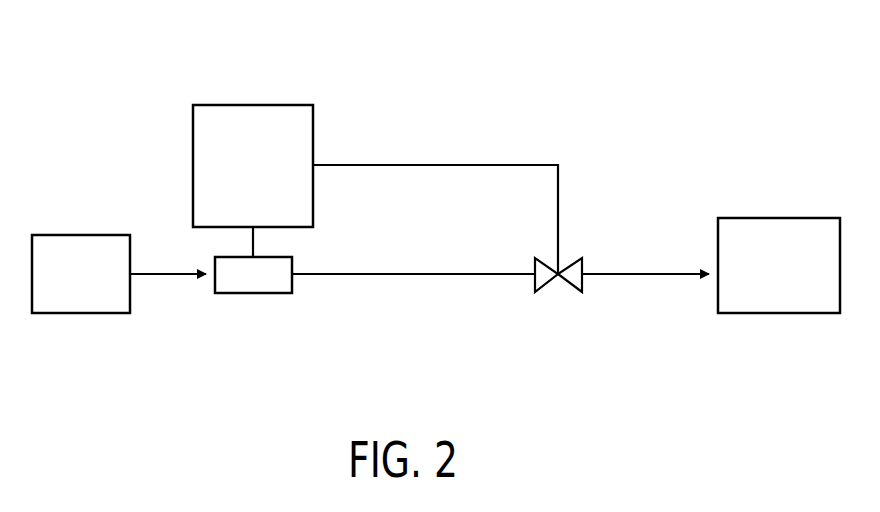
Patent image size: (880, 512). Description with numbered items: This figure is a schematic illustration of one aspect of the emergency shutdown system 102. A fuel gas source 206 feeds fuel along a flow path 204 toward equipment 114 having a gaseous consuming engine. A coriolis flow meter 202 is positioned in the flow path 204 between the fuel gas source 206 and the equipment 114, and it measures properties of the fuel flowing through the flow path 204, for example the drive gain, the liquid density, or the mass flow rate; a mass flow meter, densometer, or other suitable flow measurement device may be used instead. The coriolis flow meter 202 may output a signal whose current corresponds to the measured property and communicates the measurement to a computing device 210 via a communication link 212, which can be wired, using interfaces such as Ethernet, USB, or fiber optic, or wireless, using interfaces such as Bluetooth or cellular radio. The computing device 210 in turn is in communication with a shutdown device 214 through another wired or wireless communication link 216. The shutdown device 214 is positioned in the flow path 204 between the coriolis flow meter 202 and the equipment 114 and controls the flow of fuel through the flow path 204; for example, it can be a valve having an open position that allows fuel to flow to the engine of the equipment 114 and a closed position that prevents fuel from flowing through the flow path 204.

The emergency shutdown system 102 is at (379, 75).
The equipment 114 is at (761, 278).
The coriolis flow meter 202 is at (236, 288).
The flow path 204 is at (410, 278).
The fuel gas source 206 is at (60, 288).
The computing device 210 is at (236, 180).
The communication link 212 is at (256, 251).
The shutdown device 214 is at (560, 298).
The communication link 216 is at (434, 163).